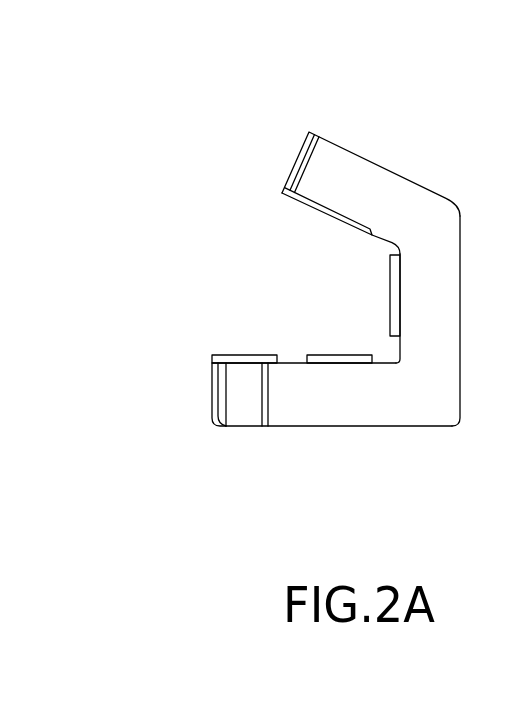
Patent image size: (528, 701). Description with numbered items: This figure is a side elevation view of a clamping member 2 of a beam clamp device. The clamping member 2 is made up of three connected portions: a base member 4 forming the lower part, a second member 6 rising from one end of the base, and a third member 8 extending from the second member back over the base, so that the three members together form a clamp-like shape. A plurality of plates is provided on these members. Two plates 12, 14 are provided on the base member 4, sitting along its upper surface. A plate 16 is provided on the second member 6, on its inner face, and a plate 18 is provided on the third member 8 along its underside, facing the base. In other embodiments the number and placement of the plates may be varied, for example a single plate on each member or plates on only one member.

The clamping member 2 is at (312, 267).
The base member 4 is at (372, 415).
The second member 6 is at (453, 280).
The third member 8 is at (371, 117).
The plate 12 is at (186, 343).
The plate 14 is at (302, 337).
The plate 16 is at (371, 258).
The plate 18 is at (256, 190).